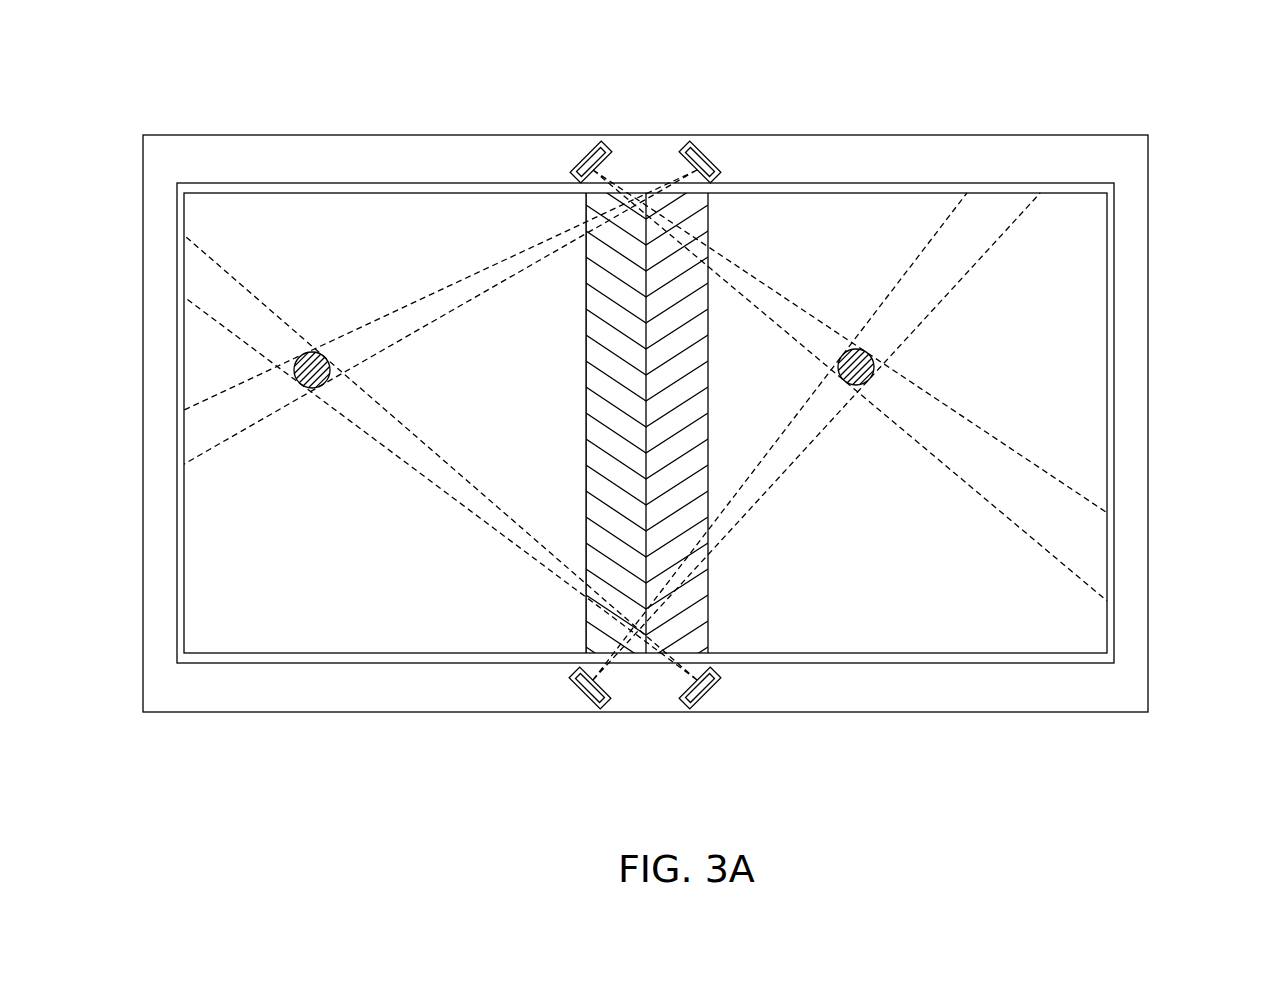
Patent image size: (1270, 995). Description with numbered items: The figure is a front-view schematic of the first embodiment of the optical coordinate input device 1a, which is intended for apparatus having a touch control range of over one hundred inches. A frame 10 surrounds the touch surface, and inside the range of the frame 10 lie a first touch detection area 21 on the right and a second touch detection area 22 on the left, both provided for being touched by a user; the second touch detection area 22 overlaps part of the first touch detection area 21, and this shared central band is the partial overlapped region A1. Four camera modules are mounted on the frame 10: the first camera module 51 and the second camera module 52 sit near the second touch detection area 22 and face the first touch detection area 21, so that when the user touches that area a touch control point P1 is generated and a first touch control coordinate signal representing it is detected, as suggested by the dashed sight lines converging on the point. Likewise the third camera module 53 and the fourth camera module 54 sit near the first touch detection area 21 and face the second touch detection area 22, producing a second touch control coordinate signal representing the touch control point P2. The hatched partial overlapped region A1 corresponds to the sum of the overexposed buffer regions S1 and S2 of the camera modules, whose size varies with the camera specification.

The optical coordinate input device 1a is at (1180, 88).
The frame 10 is at (1137, 168).
The first touch detection area 21 is at (1097, 362).
The second touch detection area 22 is at (197, 230).
The first camera module 51 is at (597, 142).
The second camera module 52 is at (590, 706).
The third camera module 53 is at (693, 142).
The fourth camera module 54 is at (698, 706).
The partial overlapped region A1 is at (645, 206).
The overexposed buffer region S1 is at (707, 209).
The overexposed buffer region S2 is at (588, 305).
The touch control point P1 is at (855, 386).
The touch control point P2 is at (312, 389).